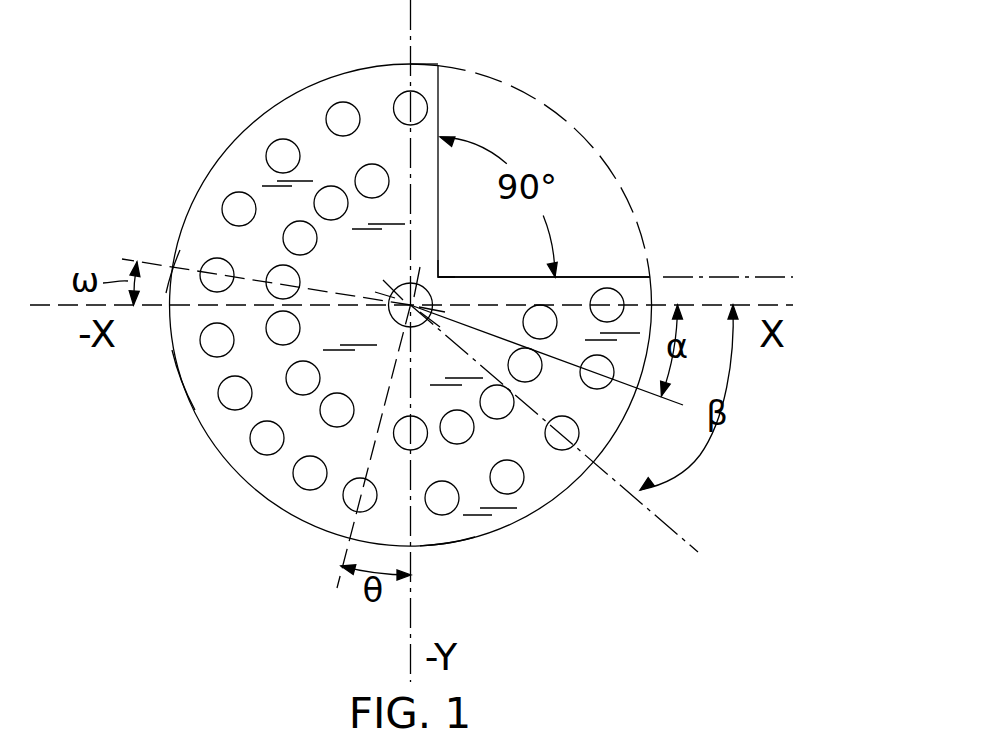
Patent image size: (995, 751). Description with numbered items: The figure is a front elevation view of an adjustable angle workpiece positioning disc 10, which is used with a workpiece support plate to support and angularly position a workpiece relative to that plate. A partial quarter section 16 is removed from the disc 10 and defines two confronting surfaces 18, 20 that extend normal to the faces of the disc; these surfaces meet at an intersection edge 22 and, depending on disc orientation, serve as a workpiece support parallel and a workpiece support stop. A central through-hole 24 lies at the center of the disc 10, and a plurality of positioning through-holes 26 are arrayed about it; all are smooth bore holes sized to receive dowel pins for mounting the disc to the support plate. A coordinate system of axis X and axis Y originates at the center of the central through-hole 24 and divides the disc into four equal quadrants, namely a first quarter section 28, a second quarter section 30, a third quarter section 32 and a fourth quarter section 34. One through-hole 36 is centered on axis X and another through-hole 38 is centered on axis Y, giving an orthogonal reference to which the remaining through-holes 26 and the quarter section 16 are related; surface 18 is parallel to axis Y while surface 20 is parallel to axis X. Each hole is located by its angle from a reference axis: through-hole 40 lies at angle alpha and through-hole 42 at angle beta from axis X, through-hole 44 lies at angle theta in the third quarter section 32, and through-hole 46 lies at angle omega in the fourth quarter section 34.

The adjustable angle workpiece positioning disc 10 is at (640, 84).
The partial quarter section 16 is at (599, 197).
The confronting surface 18 is at (440, 100).
The confronting surface 20 is at (630, 273).
The intersection edge 22 is at (440, 277).
The central through-hole 24 is at (395, 320).
The positioning through-holes 26 is at (340, 118).
The first quarter section 28 is at (437, 52).
The second quarter section 30 is at (458, 553).
The third quarter section 32 is at (167, 384).
The fourth quarter section 34 is at (157, 256).
The through-hole 36 is at (617, 297).
The through-hole 38 is at (400, 91).
The through-hole 40 is at (608, 386).
The through-hole 42 is at (570, 448).
The through-hole 44 is at (350, 506).
The through-hole 46 is at (210, 258).